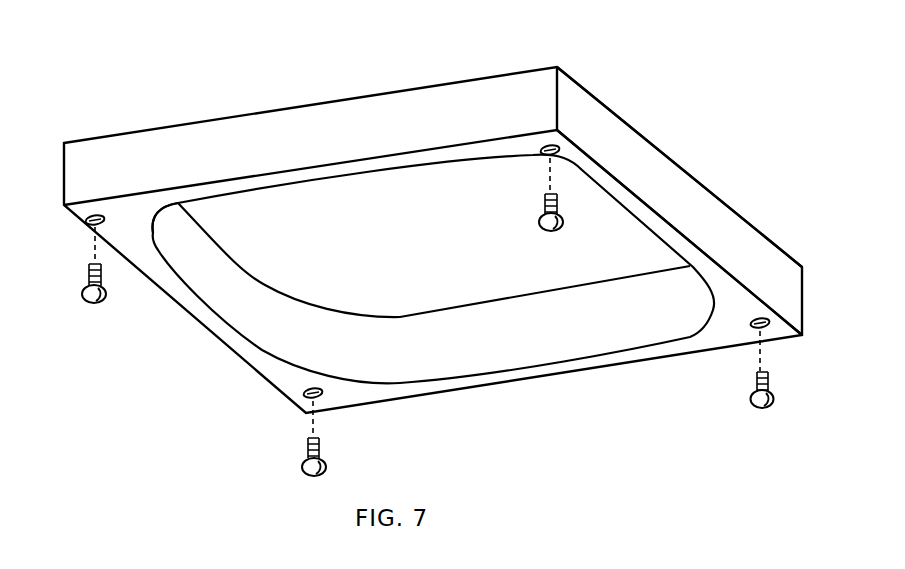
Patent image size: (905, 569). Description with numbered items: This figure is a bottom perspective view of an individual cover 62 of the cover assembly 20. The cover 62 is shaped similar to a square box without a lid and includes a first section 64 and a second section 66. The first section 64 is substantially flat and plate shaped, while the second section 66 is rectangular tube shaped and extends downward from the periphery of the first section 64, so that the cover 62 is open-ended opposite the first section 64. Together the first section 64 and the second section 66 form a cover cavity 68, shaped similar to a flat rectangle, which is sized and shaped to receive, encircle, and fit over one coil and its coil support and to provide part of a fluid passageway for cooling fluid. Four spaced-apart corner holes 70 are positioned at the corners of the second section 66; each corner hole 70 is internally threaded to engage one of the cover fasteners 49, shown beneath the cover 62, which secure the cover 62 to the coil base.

The cover assembly 20 is at (685, 165).
The cover fastener 49 is at (322, 452).
The cover 62 is at (653, 137).
The first section 64 is at (625, 253).
The second section 66 is at (727, 222).
The cover cavity 68 is at (357, 196).
The corner hole 70 is at (548, 151).